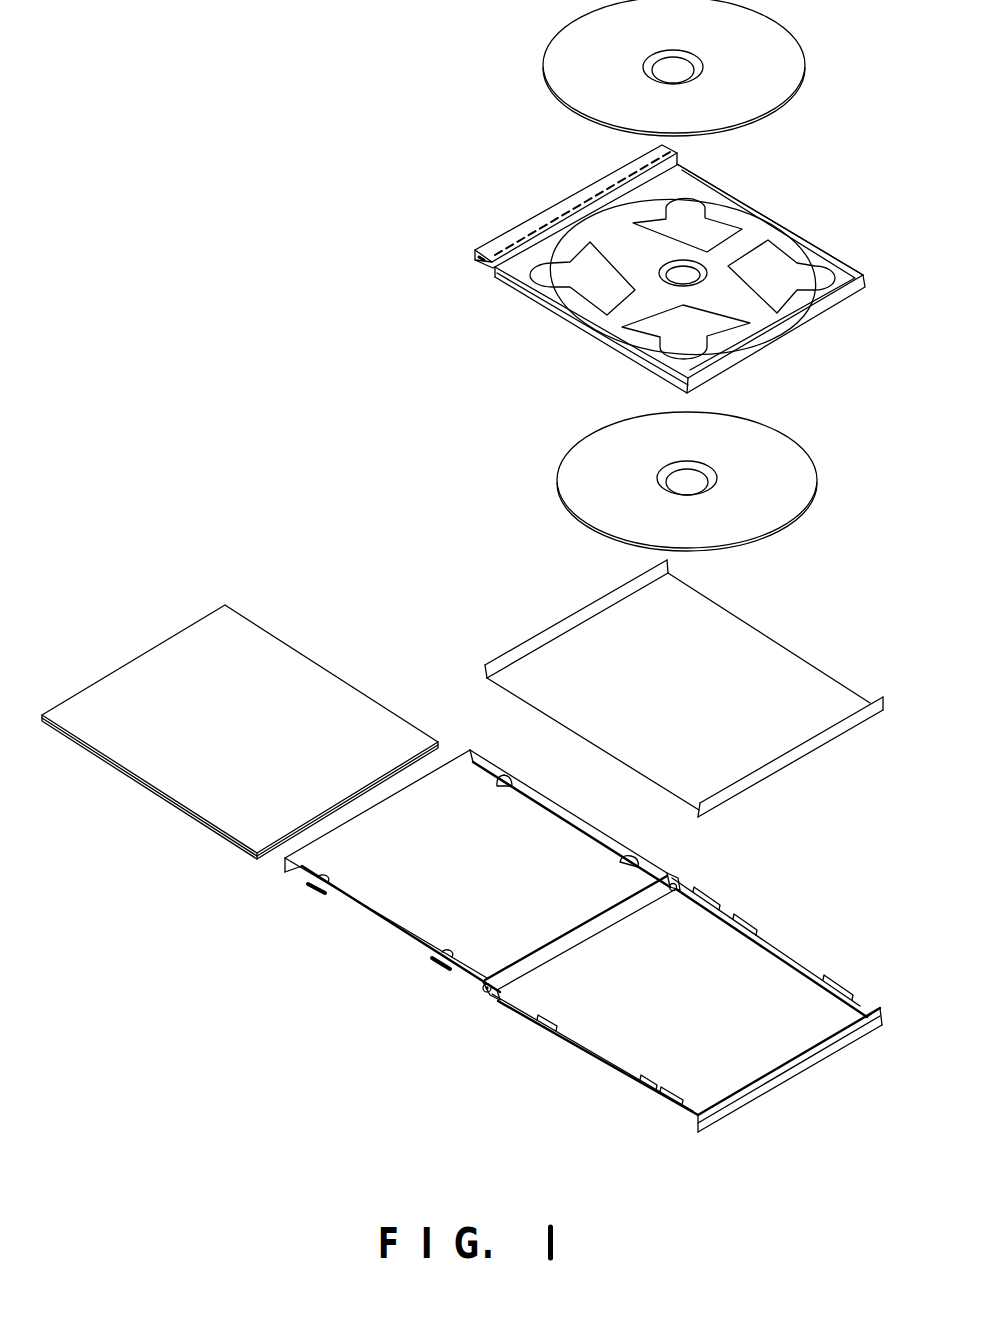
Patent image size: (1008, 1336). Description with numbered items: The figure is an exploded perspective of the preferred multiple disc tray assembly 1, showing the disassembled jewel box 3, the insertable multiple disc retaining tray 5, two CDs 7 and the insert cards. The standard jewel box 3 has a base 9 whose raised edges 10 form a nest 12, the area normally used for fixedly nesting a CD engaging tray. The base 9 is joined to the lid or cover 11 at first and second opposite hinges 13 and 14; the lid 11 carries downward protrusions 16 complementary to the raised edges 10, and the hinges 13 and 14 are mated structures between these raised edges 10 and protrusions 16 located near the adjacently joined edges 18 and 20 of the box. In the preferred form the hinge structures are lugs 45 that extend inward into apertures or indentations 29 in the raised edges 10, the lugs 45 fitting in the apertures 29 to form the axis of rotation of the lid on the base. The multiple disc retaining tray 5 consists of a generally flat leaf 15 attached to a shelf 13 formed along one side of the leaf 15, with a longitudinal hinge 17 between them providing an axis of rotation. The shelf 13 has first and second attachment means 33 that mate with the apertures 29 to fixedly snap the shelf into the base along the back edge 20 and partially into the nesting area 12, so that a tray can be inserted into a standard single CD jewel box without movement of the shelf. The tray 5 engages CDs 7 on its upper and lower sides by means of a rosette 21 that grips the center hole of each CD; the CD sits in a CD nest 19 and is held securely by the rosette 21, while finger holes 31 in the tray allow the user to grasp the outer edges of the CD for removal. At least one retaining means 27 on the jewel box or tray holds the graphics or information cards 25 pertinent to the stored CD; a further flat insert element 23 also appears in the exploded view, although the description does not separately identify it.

The multiple disc tray 1 is at (335, 262).
The jewel box 3 is at (580, 941).
The multiple disc retaining tray 5 is at (657, 521).
The CDs 7 is at (797, 62).
The base 9 is at (765, 965).
The raised edges 10 is at (760, 1080).
The lid or cover 11 is at (570, 856).
The nest 12 is at (635, 1050).
The shelf 13 is at (528, 217).
The second hinge 14 is at (510, 985).
The leaf 15 is at (737, 202).
The downward protrusions 16 is at (330, 900).
The longitudinal hinge 17 is at (597, 185).
The adjacently joined edge 18 is at (525, 957).
The CD nest 19 is at (607, 320).
The back edge 20 is at (560, 938).
The rosette 21 is at (665, 272).
The bottom panel 23 is at (760, 643).
The graphics or information cards 25 is at (342, 695).
The retaining means 27 is at (497, 785).
The apertures or indentations 29 is at (673, 882).
The finger holes 31 is at (822, 287).
The attachment means 33 is at (480, 258).
The lugs 45 is at (480, 992).